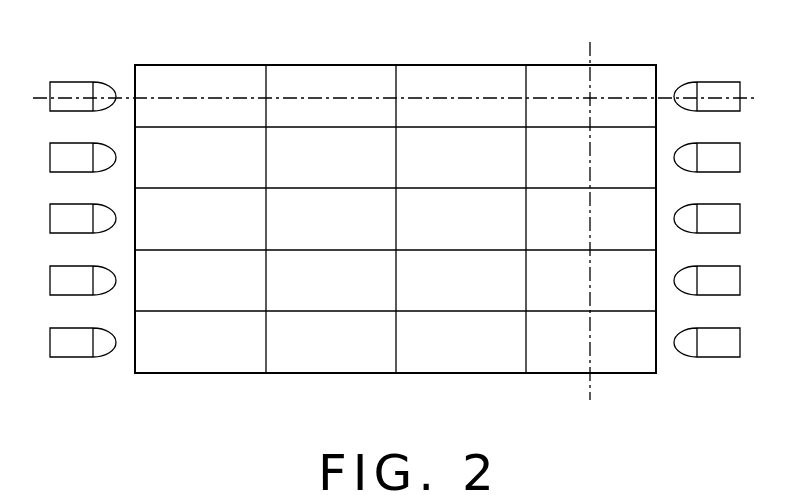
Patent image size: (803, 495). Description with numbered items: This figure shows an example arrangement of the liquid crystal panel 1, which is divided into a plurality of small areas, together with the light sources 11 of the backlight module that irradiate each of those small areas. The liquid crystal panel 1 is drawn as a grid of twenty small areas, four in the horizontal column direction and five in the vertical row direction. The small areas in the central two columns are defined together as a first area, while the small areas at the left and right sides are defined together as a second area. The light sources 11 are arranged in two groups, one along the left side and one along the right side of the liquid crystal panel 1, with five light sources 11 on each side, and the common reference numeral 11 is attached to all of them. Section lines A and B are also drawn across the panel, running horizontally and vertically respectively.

The liquid crystal panel 1 is at (215, 65).
The light source 11 is at (395, 232).
The section line A-A' A is at (393, 98).
The section line B-B' B is at (592, 218).